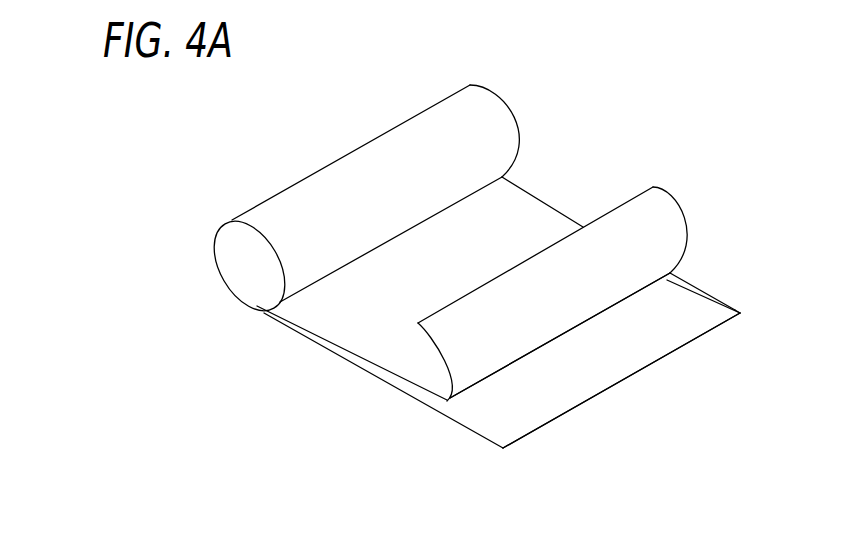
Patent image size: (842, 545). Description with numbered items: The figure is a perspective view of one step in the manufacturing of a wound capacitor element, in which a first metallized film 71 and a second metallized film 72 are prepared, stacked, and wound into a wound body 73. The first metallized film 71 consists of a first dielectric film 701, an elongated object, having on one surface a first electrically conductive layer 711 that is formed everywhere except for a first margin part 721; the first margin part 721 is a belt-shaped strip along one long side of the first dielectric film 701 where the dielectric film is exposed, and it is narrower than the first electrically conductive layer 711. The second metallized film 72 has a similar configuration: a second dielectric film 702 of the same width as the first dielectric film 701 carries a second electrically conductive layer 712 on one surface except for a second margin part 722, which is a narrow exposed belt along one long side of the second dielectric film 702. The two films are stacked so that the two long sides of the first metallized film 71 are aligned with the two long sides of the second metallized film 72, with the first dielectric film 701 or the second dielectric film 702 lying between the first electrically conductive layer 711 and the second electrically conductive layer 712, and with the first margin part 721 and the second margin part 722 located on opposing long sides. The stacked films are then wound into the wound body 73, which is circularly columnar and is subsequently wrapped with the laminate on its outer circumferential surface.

The first metallized film 71 is at (657, 353).
The first electrically conductive layer 711 is at (617, 375).
The second electrically conductive layer 712 is at (528, 205).
The second metallized film 72 is at (677, 228).
The first margin part 721 is at (735, 312).
The second margin part 722 is at (340, 350).
The wound body 73 is at (493, 103).
The first dielectric film 701 is at (708, 300).
The second dielectric film 702 is at (478, 358).